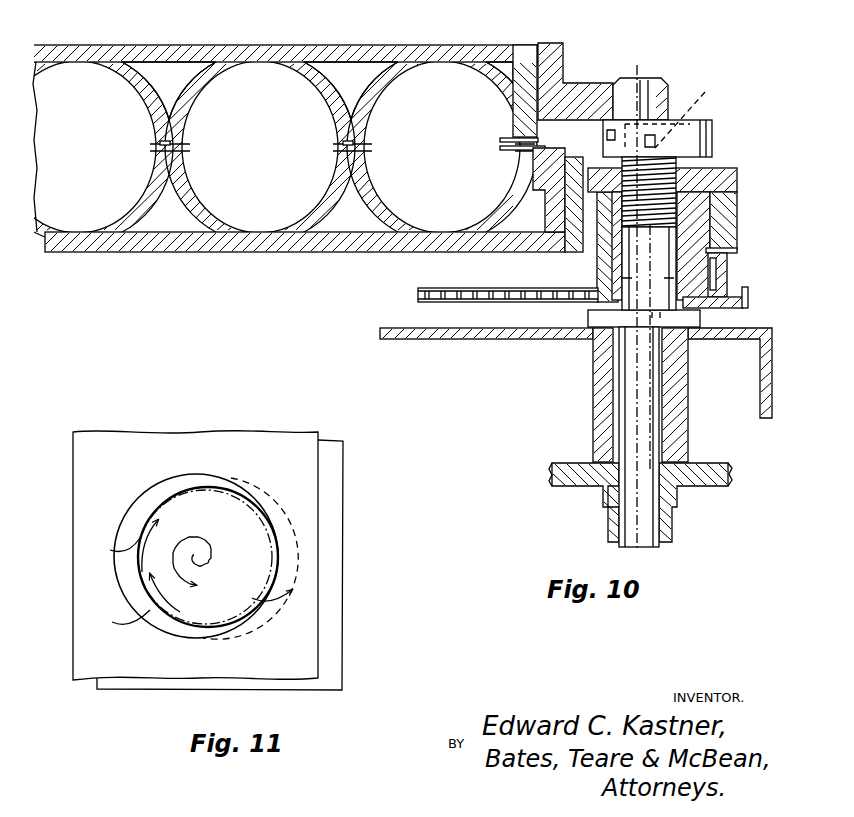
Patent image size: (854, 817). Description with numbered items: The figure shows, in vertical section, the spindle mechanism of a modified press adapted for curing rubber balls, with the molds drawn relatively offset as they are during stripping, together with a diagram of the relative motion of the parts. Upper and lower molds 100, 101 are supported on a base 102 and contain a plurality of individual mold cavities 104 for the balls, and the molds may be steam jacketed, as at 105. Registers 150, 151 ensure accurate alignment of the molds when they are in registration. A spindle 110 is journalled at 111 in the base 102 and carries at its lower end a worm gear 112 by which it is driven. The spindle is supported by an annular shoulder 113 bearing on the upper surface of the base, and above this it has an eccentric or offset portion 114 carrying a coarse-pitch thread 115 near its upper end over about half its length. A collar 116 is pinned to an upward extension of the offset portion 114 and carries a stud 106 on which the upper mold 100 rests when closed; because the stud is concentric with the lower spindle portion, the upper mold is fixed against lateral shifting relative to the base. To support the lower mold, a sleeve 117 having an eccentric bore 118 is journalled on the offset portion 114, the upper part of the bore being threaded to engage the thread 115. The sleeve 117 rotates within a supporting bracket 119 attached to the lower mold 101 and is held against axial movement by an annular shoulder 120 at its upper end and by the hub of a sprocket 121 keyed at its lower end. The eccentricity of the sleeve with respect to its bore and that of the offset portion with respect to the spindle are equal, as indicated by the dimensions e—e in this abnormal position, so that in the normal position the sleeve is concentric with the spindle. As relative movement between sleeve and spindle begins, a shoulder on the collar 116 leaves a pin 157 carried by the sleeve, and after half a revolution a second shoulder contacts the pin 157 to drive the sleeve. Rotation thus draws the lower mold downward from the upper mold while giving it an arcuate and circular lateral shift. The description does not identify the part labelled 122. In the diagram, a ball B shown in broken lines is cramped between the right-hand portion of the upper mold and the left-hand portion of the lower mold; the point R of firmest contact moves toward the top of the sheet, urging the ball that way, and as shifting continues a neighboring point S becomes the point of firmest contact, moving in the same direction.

In FIG. 10, the upper mold 100 is at (312, 37).
In FIG. 11, the upper mold 100 is at (302, 438).
In FIG. 10, the lower mold 101 is at (319, 253).
In FIG. 11, the lower mold 101 is at (334, 447).
In FIG. 10, the mold cavities 104 is at (184, 99).
In FIG. 11, the mold cavities 104 is at (158, 490).
In FIG. 10, the steam jacket 105 is at (160, 68).
In FIG. 10, the pin (stud) 106 is at (655, 78).
In FIG. 10, the pin 157 is at (697, 110).
In FIG. 10, the collar 116 is at (712, 123).
In FIG. 10, the register 150 is at (540, 140).
In FIG. 10, the register 151 is at (550, 148).
In FIG. 10, the coarse-pitch thread 115 is at (702, 172).
In FIG. 10, the annular shoulder 120 is at (736, 185).
In FIG. 10, the sleeve 117 is at (733, 218).
In FIG. 10, the eccentric bore 118 is at (737, 250).
In FIG. 10, the sprocket 121 is at (728, 277).
In FIG. 10, the supporting bracket 119 is at (583, 248).
In FIG. 10, the toothed strip 122 is at (469, 288).
In FIG. 10, the annular shoulder 113 is at (590, 320).
In FIG. 10, the eccentric or offset portion 114 is at (697, 300).
In FIG. 10, the base 102 is at (536, 341).
In FIG. 10, the journal 111 is at (610, 372).
In FIG. 10, the spindle 110 is at (648, 408).
In FIG. 10, the worm gear 112 is at (557, 470).
In FIG. 10, the ball B is at (260, 147).
In FIG. 11, the ball B is at (212, 480).
In FIG. 11, the point on lower mold R is at (142, 548).
In FIG. 11, the neighboring point S is at (145, 592).